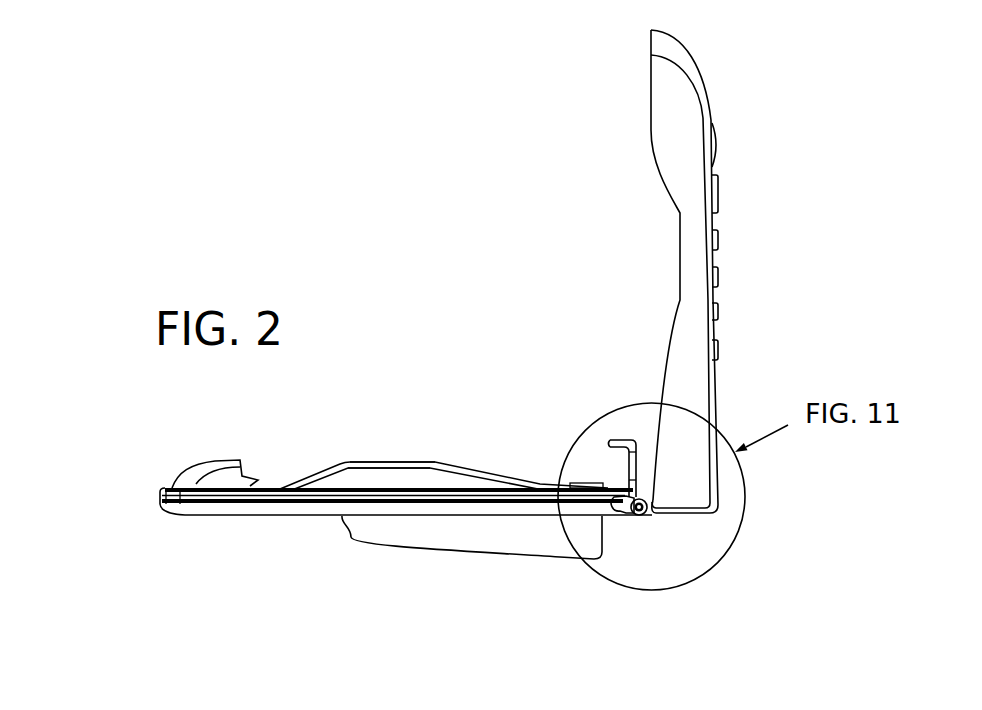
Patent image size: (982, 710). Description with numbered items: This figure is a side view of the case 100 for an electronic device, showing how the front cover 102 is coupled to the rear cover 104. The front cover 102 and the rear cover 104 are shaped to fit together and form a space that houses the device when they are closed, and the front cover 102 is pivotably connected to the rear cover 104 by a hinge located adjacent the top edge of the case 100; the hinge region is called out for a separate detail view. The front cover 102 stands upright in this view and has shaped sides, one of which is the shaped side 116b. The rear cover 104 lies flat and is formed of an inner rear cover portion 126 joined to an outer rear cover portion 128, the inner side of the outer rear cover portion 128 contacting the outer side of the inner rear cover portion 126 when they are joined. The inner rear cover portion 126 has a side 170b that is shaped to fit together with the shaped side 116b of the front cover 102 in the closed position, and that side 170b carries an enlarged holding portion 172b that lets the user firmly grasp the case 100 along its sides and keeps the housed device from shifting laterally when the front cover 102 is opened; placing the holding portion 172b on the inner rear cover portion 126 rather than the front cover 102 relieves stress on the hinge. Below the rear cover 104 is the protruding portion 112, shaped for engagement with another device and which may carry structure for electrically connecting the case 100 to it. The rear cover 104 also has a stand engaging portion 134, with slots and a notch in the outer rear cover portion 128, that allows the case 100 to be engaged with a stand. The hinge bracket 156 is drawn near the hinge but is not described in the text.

The case 100 is at (757, 104).
The front cover 102 is at (713, 382).
The rear cover 104 is at (83, 417).
The protruding portion 112 is at (393, 553).
The shaped side 116b is at (678, 362).
The inner rear cover portion 126 is at (175, 478).
The outer rear cover portion 128 is at (160, 498).
The stand engaging portion 134 is at (159, 532).
The hinge bracket 156 is at (618, 440).
The side 170b is at (465, 468).
The enlarged holding portion 172b is at (370, 477).